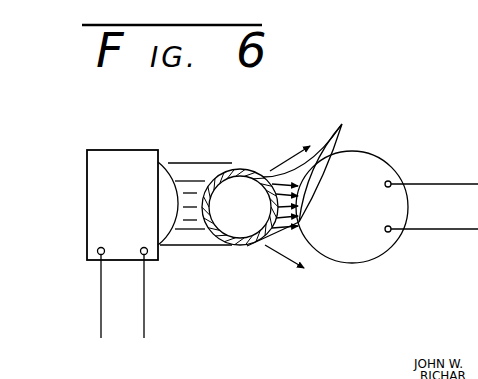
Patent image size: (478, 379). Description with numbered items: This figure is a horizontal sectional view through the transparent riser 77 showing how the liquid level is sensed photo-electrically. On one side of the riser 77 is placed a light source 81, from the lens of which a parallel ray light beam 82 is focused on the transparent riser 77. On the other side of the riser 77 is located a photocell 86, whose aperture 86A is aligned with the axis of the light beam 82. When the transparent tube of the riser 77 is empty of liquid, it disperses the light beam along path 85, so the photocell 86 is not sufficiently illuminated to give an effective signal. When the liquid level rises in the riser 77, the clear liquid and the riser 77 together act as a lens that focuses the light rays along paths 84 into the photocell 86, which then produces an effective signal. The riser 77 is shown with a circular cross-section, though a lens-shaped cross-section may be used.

The light source 81 is at (103, 153).
The light beam 82 is at (183, 231).
The riser 77 is at (243, 172).
The paths 84 is at (305, 181).
The path 85 is at (284, 158).
The photocell 86 is at (378, 245).
The aperture 86A is at (319, 222).